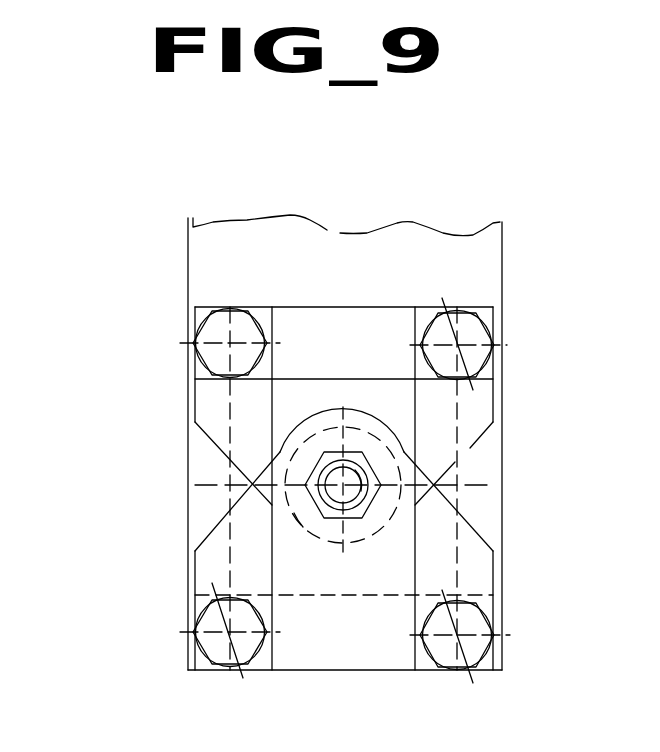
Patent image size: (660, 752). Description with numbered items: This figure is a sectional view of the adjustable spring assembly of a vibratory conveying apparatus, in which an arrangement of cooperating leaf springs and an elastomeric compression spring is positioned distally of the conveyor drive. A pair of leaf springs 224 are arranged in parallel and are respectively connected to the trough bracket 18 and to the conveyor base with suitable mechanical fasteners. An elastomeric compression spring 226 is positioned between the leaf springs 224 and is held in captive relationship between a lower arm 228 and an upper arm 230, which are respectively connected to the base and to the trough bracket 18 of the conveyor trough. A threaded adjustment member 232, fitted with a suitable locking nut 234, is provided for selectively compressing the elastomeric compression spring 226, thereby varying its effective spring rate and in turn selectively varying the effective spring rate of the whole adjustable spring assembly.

The trough bracket 18 is at (318, 242).
The leaf springs 224 is at (198, 482).
The elastomeric compression spring 226 is at (314, 430).
The lower arm 228 is at (471, 533).
The upper arm 230 is at (505, 433).
The threaded adjustment member 232 is at (322, 517).
The locking nut 234 is at (368, 510).